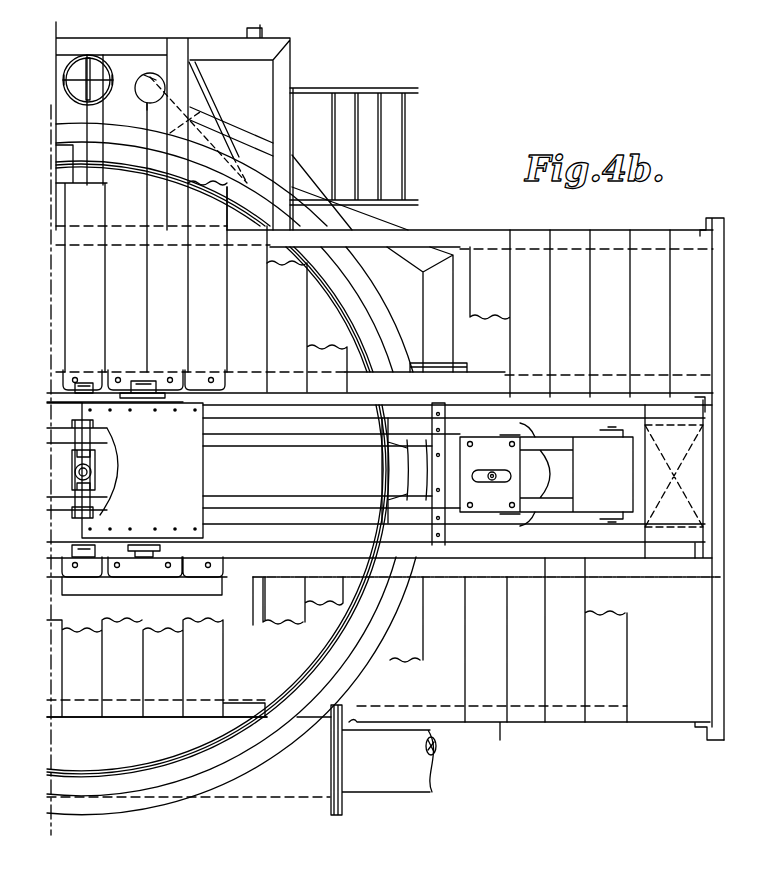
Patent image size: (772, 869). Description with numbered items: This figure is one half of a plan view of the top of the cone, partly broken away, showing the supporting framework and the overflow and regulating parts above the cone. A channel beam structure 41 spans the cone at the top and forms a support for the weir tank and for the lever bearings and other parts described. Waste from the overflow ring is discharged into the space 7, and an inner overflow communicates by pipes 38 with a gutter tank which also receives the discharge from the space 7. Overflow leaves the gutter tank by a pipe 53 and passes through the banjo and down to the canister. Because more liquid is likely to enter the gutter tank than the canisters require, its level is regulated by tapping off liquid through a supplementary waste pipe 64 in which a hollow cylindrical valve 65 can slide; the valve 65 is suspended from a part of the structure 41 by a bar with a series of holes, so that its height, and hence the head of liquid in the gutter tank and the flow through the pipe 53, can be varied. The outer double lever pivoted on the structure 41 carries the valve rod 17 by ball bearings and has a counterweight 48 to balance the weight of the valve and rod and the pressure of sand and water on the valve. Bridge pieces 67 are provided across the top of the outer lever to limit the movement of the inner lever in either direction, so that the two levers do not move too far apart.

The space 7 is at (352, 306).
The valve rod 17 is at (95, 473).
The pipes 38 is at (128, 158).
The channel beam structure 41 is at (260, 603).
The counterweight 48 is at (674, 481).
The pipe 53 is at (266, 112).
The supplementary waste pipe 64 is at (80, 63).
The hollow cylindrical valve 65 is at (100, 60).
The bridge pieces 67 is at (432, 505).